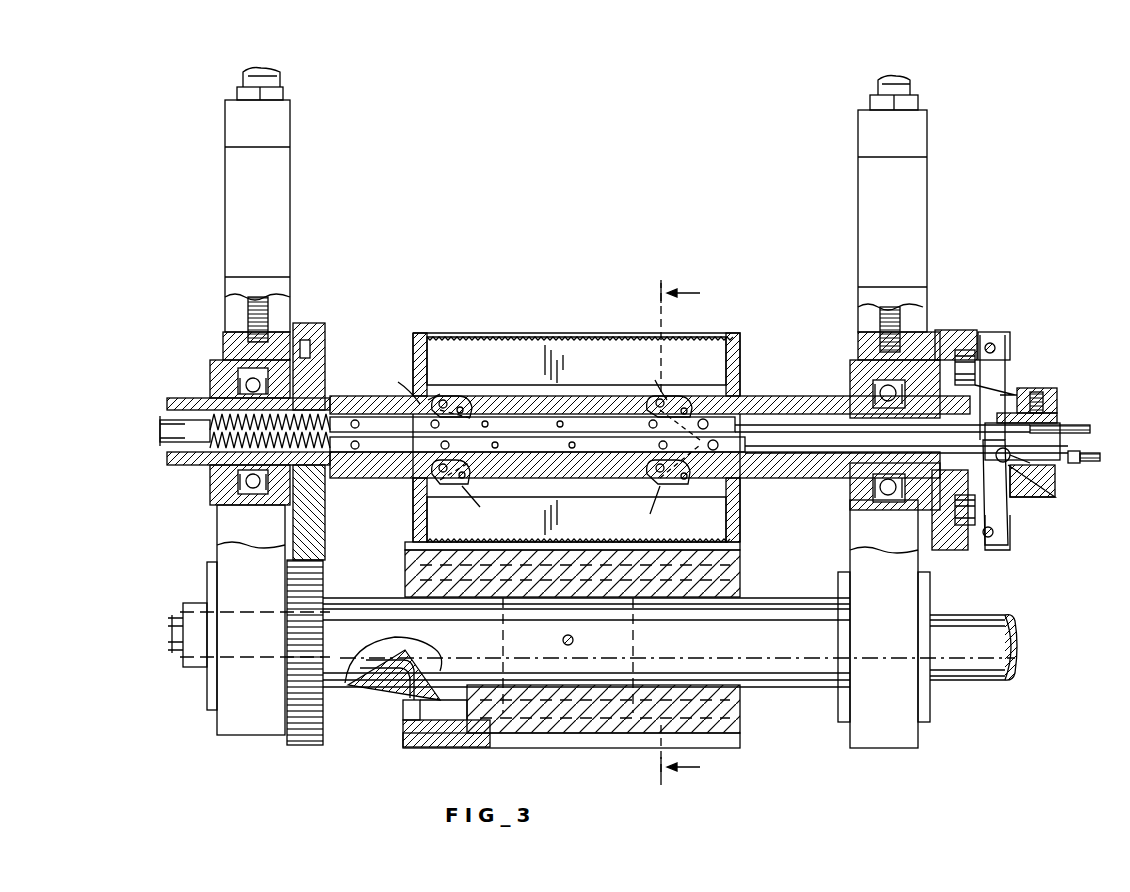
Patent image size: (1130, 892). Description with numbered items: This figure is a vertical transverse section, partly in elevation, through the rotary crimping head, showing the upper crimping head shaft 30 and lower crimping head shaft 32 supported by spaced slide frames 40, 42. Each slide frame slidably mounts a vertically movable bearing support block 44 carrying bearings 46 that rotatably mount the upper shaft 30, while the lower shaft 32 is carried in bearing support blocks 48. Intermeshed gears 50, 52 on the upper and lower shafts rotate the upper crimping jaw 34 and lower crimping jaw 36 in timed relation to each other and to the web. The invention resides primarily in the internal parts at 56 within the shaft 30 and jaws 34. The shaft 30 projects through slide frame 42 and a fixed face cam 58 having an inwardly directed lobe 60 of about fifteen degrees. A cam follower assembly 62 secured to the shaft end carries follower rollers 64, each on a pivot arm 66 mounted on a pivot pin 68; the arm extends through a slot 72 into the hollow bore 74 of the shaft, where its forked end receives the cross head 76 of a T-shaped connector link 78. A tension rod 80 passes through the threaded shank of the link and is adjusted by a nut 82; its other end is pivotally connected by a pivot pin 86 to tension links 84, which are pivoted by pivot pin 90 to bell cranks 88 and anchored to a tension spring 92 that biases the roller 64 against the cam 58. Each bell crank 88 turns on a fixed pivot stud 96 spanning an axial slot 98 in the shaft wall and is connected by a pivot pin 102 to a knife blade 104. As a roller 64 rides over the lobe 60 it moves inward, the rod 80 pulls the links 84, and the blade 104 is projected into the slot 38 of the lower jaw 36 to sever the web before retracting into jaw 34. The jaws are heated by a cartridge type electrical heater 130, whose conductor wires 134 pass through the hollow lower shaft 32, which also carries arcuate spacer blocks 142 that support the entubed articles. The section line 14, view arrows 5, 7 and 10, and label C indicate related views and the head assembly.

The slide frame 40 is at (285, 130).
The slide frame 42 is at (868, 130).
The bearing support block 44 is at (223, 342).
The bearings 46 is at (212, 376).
The gear 50 is at (324, 340).
The upper crimping head shaft 30 is at (188, 462).
The conductor wires 134 is at (182, 416).
The tension spring 92 is at (332, 398).
The gear 52 is at (308, 738).
The bearing support blocks 48 is at (212, 575).
The lower crimping head shaft 32 is at (360, 606).
The crimping jaw 34 is at (416, 336).
The cutting assembly C is at (474, 304).
The internal parts 56 is at (538, 352).
The knife blade 104 is at (607, 366).
The nut 82 is at (735, 412).
The tension links 84 is at (581, 430).
The bell crank 88 is at (458, 404).
The pivot stud 96 is at (522, 440).
The pivot pin 102 is at (468, 408).
The axial slot 98 is at (428, 468).
The pivot pin 90 is at (440, 445).
The pivot pin 86 is at (708, 416).
The section line 14- 14 is at (659, 532).
The view arrow 7 is at (760, 302).
The view arrow 10 is at (738, 548).
The slot 38 is at (734, 550).
The crimping jaw 36 is at (734, 590).
The cartridge type electrical heater 130 is at (412, 562).
The view arrow 5 is at (382, 510).
The arcuate spacer blocks 142 is at (636, 635).
The face cam 58 is at (942, 332).
The cam follower assembly 62 is at (1010, 330).
The follower rollers 64 is at (975, 352).
The pivot arm 66 is at (1006, 350).
The pivot pin 68 is at (1000, 350).
The slot 72 is at (1010, 400).
The T-shaped connector link 78 is at (1056, 408).
The tension rod 80 is at (908, 430).
The hollow bore 74 is at (1050, 442).
The cross head 76 is at (1028, 490).
The lobe 60 is at (940, 527).